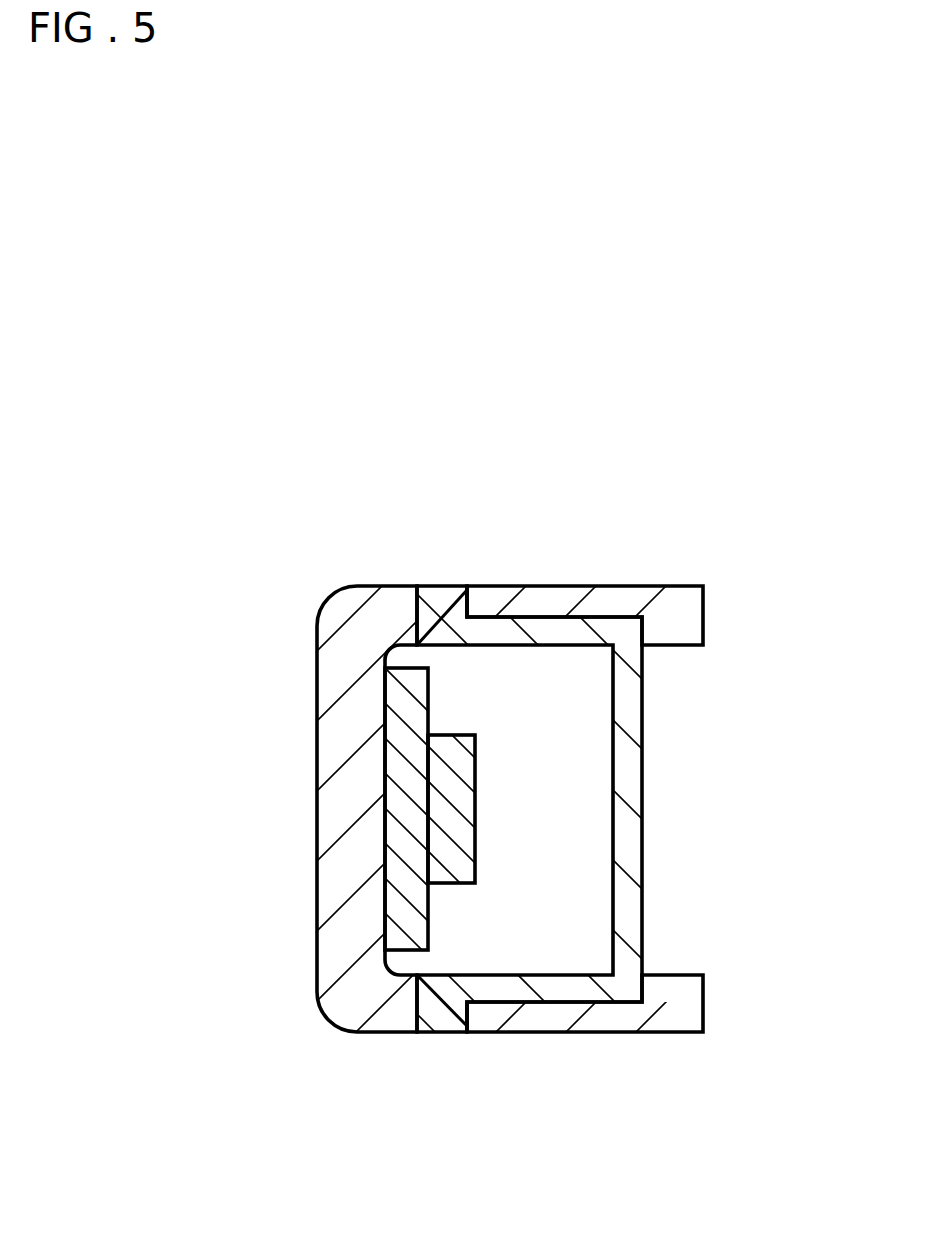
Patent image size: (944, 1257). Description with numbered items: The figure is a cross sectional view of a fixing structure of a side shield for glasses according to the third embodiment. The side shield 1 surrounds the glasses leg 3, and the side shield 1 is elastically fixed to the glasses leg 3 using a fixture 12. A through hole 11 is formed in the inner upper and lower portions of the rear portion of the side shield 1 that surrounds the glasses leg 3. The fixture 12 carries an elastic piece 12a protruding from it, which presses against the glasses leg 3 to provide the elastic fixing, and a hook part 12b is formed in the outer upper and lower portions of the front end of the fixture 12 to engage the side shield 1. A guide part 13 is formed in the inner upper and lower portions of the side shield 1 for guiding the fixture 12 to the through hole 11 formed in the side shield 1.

The side shield 1 is at (333, 682).
The glasses leg 3 is at (390, 900).
The through hole 11 is at (467, 600).
The fixture 12 is at (632, 782).
The elastic piece 12a is at (458, 813).
The hook part 12b is at (437, 633).
The guide part 13 is at (668, 618).